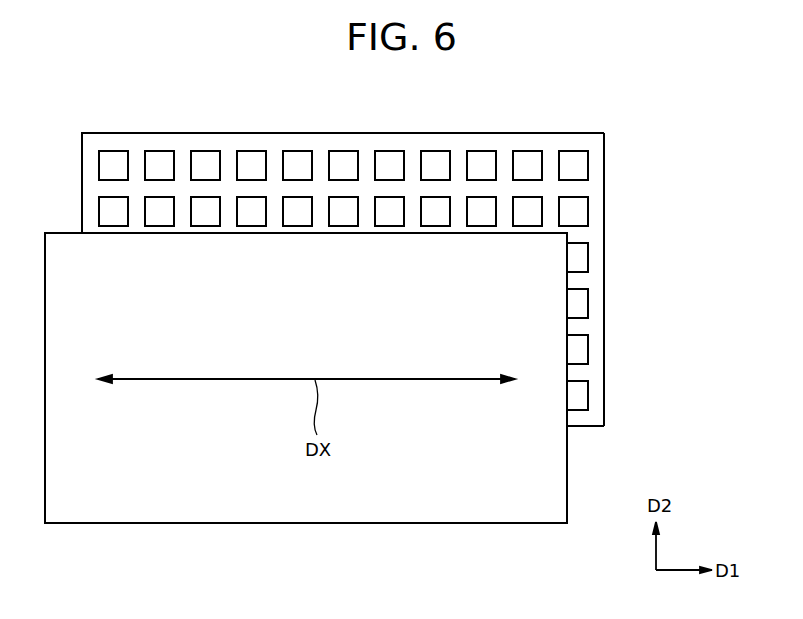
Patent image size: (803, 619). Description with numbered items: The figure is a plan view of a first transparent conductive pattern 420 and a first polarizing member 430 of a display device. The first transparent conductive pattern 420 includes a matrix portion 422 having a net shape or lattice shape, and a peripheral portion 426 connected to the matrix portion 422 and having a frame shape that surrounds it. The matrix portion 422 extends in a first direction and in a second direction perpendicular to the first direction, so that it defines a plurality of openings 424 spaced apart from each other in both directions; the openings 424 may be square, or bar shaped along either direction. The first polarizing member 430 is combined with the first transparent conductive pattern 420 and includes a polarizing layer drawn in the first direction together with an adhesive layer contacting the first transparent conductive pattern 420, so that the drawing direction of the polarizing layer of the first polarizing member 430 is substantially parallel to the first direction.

The first transparent conductive pattern 420 is at (399, 279).
The matrix portion 422 is at (547, 189).
The openings 424 is at (575, 165).
The peripheral portion 426 is at (595, 212).
The first polarizing member 430 is at (560, 463).